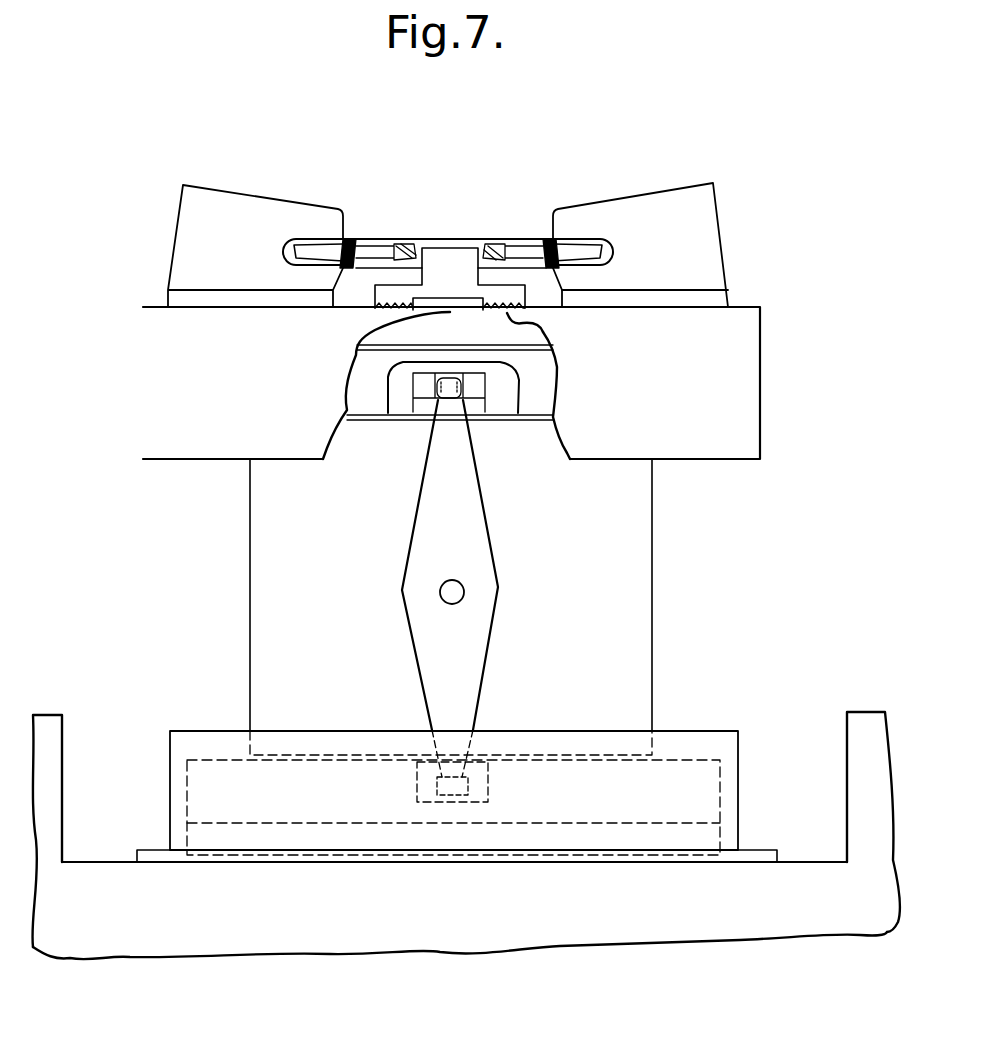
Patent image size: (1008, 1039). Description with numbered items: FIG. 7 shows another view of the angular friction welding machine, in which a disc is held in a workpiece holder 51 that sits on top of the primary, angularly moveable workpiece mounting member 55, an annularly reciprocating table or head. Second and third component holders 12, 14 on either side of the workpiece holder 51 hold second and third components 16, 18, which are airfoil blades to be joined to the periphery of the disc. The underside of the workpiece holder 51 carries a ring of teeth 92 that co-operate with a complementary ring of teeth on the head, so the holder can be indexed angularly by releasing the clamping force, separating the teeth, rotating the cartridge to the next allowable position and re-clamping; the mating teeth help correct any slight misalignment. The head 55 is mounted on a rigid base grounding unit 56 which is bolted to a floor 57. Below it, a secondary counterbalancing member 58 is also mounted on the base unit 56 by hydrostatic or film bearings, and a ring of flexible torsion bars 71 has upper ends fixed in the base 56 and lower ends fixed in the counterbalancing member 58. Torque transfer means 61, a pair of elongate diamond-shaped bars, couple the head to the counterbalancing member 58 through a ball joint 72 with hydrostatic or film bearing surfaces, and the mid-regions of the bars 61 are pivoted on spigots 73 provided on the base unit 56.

The second component holder 12 is at (183, 225).
The third component holder 14 is at (683, 200).
The second component 16 is at (318, 250).
The third component 18 is at (578, 248).
The workpiece holder 51 is at (452, 262).
The workpiece mounting angularly moveable member 55 is at (363, 375).
The rigid base grounding unit 56 is at (768, 378).
The floor 57 is at (442, 933).
The counterbalancing member 58 is at (657, 790).
The torque transfer means 61 is at (473, 540).
The flexible torsion bars 71 is at (690, 295).
The ball joint 72 is at (433, 397).
The spigots 73 is at (463, 597).
The ring of teeth 92 is at (528, 330).